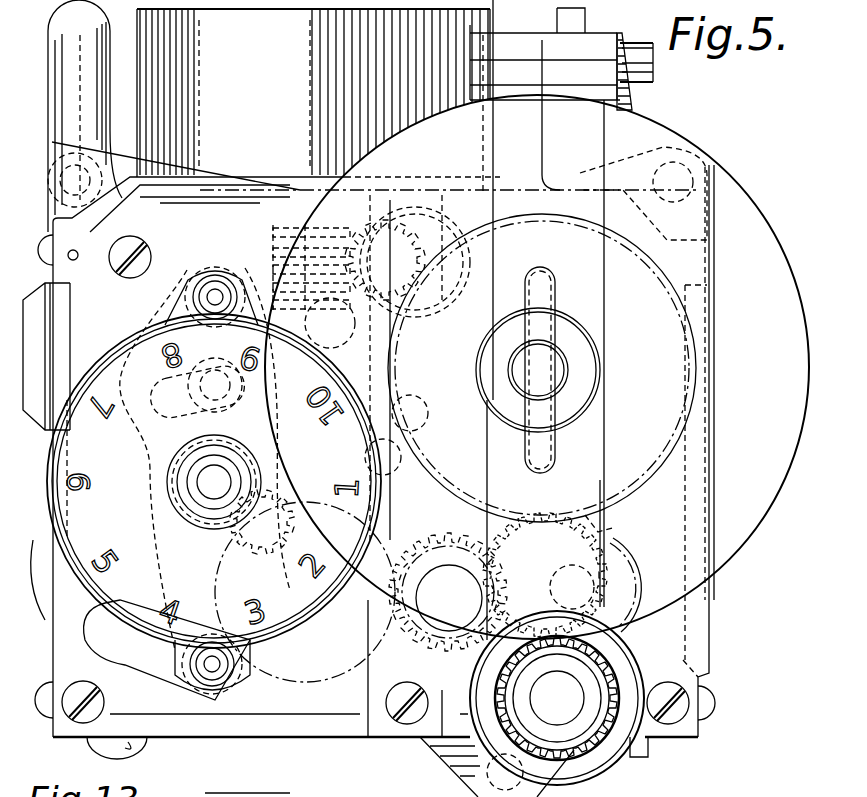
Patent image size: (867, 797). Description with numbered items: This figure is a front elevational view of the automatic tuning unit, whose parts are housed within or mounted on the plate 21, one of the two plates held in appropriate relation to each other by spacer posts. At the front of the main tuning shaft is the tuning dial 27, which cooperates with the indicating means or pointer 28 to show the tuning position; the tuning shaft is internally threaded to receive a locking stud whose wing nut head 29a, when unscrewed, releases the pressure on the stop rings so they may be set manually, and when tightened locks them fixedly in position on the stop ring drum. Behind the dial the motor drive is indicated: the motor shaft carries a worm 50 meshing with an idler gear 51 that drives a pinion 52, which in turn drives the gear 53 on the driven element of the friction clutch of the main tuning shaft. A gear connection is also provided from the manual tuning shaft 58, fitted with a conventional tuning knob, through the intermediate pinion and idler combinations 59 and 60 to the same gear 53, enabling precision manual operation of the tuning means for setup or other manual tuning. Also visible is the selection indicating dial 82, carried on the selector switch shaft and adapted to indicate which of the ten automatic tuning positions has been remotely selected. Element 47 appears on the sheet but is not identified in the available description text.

The plate 21 is at (672, 648).
The tuning dial 27 is at (752, 212).
The pointer 28 is at (633, 92).
The wing nut head 29a is at (540, 449).
The solenoid block 47 is at (490, 18).
The worm 50 is at (272, 240).
The idler gear 51 is at (373, 232).
The pinion 52 is at (440, 228).
The gear 53 is at (612, 512).
The manual tuning shaft 58 is at (564, 718).
The pinion and idler combination 59 is at (431, 546).
The pinion and idler combination 60 is at (606, 530).
The selection indicating dial 82 is at (288, 627).